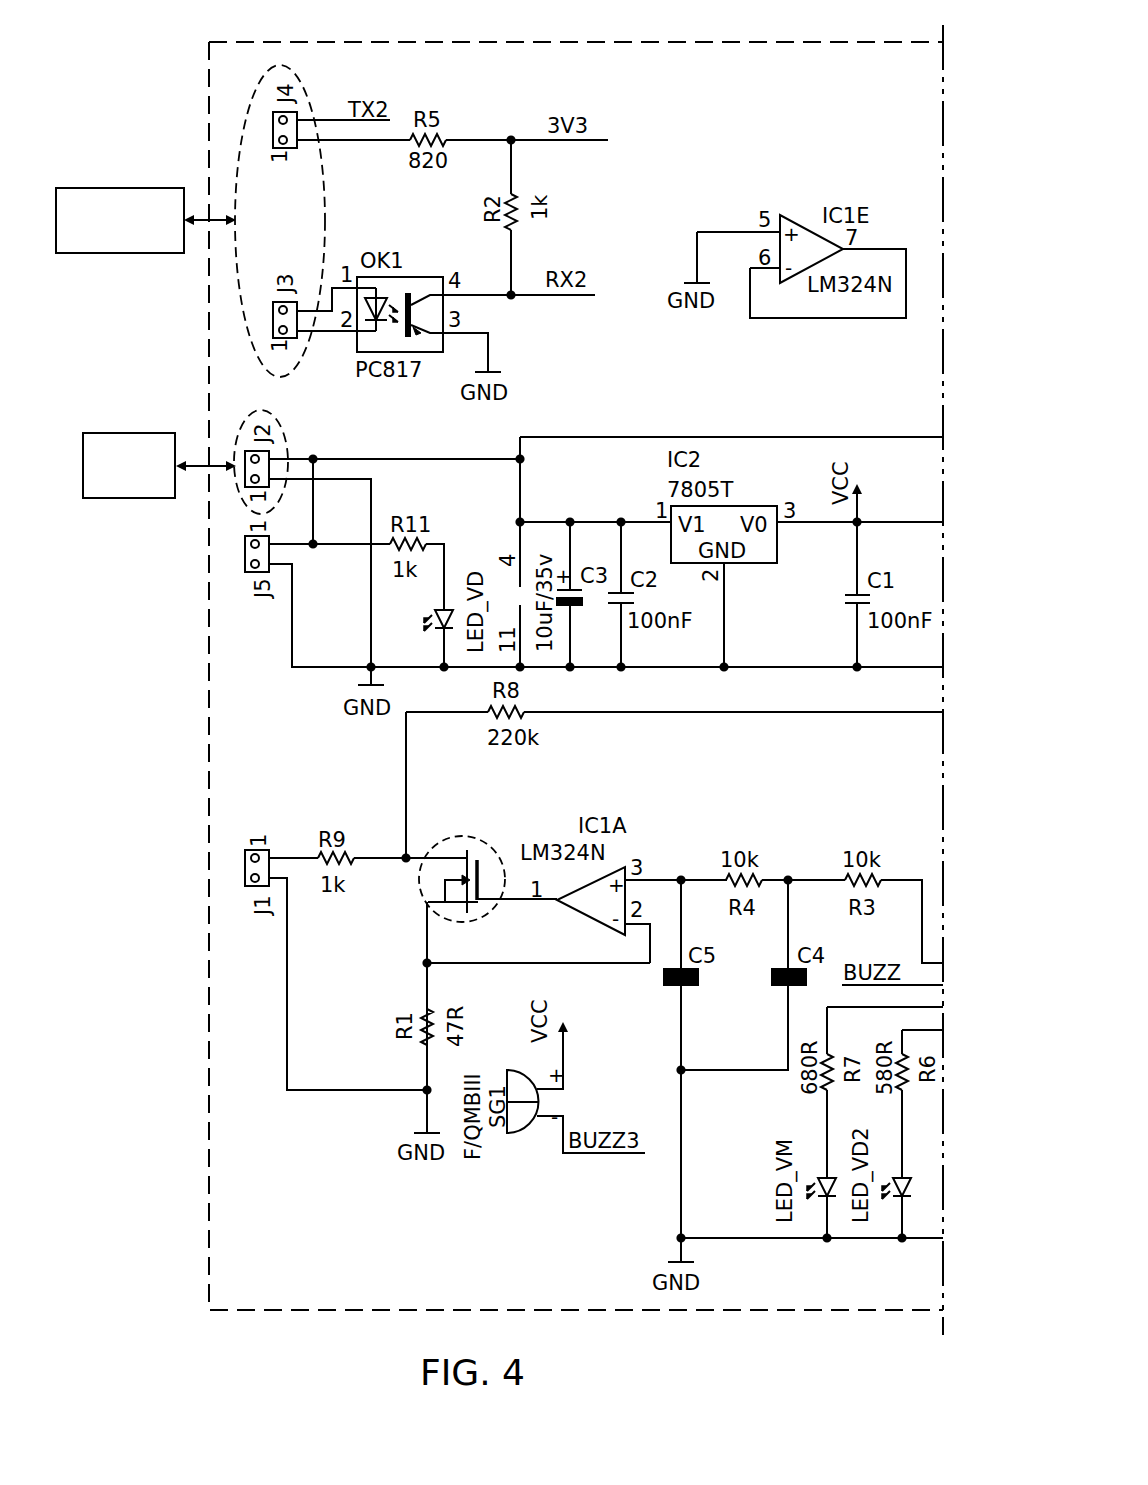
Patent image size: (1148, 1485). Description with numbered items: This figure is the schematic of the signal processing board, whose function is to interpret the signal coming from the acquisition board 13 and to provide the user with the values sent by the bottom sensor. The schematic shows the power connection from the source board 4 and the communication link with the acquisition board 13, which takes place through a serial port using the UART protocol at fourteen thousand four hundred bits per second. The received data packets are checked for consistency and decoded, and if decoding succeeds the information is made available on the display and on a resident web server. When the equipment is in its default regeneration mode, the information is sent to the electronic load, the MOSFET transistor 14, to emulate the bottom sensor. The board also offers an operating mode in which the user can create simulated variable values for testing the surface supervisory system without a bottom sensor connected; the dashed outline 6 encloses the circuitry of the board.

The control circuit board 6 is at (206, 46).
The acquisition board 13 is at (118, 188).
The source board 4 is at (130, 432).
The MOSFET transistor 14 is at (421, 884).